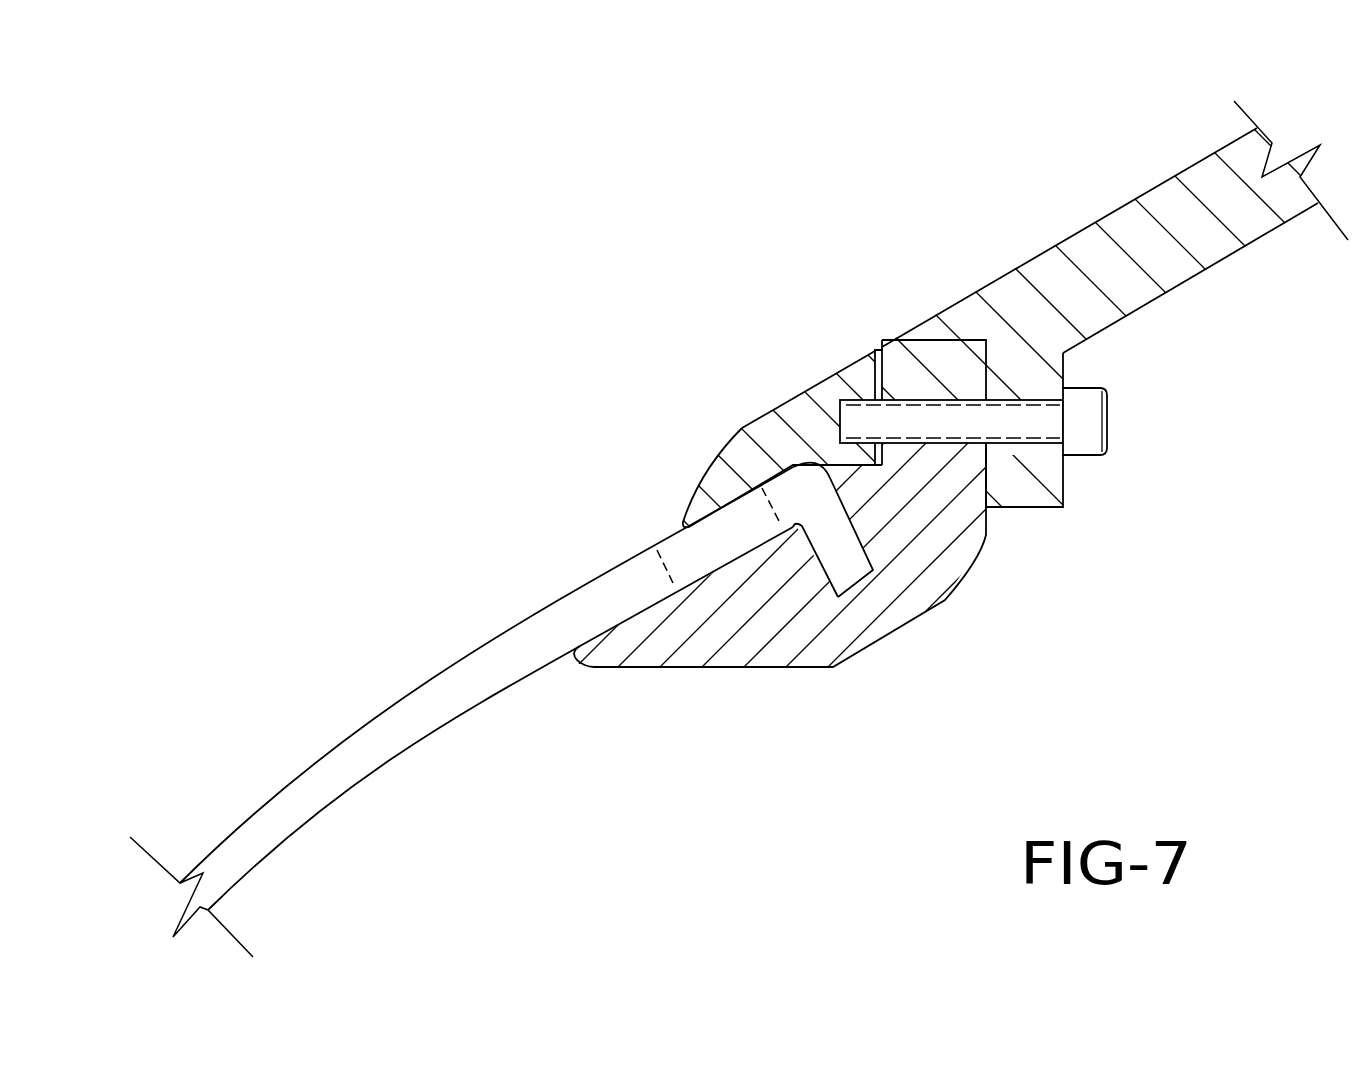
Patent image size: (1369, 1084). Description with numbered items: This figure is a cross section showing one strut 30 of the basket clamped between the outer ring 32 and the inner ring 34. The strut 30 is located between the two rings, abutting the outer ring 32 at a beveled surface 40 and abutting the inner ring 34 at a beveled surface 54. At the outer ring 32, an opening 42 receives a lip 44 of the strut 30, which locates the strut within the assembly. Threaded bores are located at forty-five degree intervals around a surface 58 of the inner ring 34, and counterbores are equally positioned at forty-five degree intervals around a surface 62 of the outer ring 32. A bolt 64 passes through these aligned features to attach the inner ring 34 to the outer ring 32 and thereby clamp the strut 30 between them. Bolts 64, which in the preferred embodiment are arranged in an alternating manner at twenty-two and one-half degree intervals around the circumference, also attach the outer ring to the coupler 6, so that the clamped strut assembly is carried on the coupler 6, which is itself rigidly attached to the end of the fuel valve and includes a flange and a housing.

The coupler 6 is at (1085, 247).
The strut 30 is at (263, 862).
The outer ring 32 is at (676, 667).
The inner ring 34 is at (742, 428).
The beveled surface 40 is at (602, 630).
The opening 42 is at (866, 556).
The lip 44 is at (833, 555).
The beveled surface 54 is at (680, 538).
The surface 58 is at (878, 388).
The surface 62 is at (875, 373).
The bolt 64 is at (1084, 413).